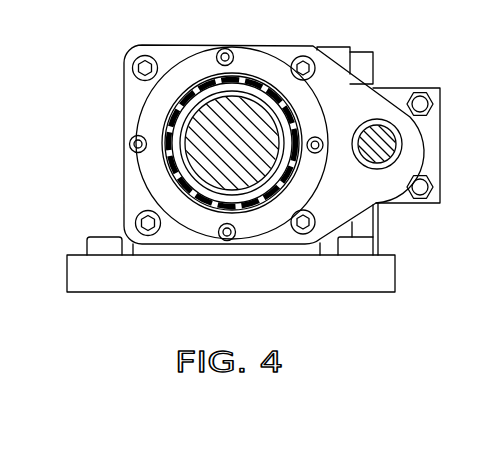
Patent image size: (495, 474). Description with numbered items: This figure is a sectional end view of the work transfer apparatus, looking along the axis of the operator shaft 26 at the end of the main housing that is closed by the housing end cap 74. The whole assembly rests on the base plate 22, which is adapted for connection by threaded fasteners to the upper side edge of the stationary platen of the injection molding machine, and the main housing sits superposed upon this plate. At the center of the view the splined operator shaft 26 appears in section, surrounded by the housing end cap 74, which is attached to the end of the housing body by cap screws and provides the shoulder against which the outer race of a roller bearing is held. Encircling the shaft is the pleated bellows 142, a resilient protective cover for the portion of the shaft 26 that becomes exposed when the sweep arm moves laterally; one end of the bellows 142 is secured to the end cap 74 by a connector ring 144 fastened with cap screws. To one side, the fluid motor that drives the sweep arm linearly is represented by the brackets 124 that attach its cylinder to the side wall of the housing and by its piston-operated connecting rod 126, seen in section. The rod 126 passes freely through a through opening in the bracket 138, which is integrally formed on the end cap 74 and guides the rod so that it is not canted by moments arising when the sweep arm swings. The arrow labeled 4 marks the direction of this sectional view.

The pump unit 4 is at (275, 149).
The base plate 22 is at (392, 268).
The operator shaft 26 is at (190, 132).
The housing end cap 74 is at (132, 83).
The brackets 124 is at (333, 47).
The connecting rod 126 is at (393, 139).
The bracket 138 is at (385, 107).
The pleated bellows 142 is at (163, 178).
The connector rings 144 is at (140, 165).